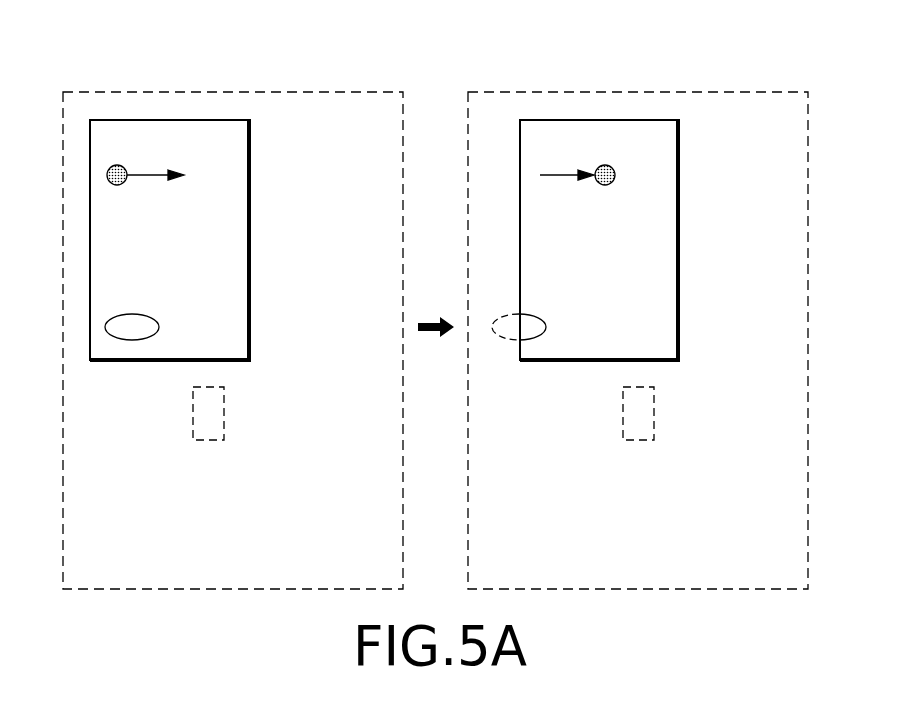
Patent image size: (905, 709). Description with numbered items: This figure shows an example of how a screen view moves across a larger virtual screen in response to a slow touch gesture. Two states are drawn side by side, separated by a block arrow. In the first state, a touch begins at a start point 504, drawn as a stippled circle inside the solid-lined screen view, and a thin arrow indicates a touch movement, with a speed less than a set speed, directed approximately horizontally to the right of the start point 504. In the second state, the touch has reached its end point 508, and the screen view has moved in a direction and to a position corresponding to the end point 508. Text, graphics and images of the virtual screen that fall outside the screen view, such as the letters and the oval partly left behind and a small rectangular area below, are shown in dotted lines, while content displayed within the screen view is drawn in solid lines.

The start point 504 is at (125, 183).
The end point 508 is at (606, 186).